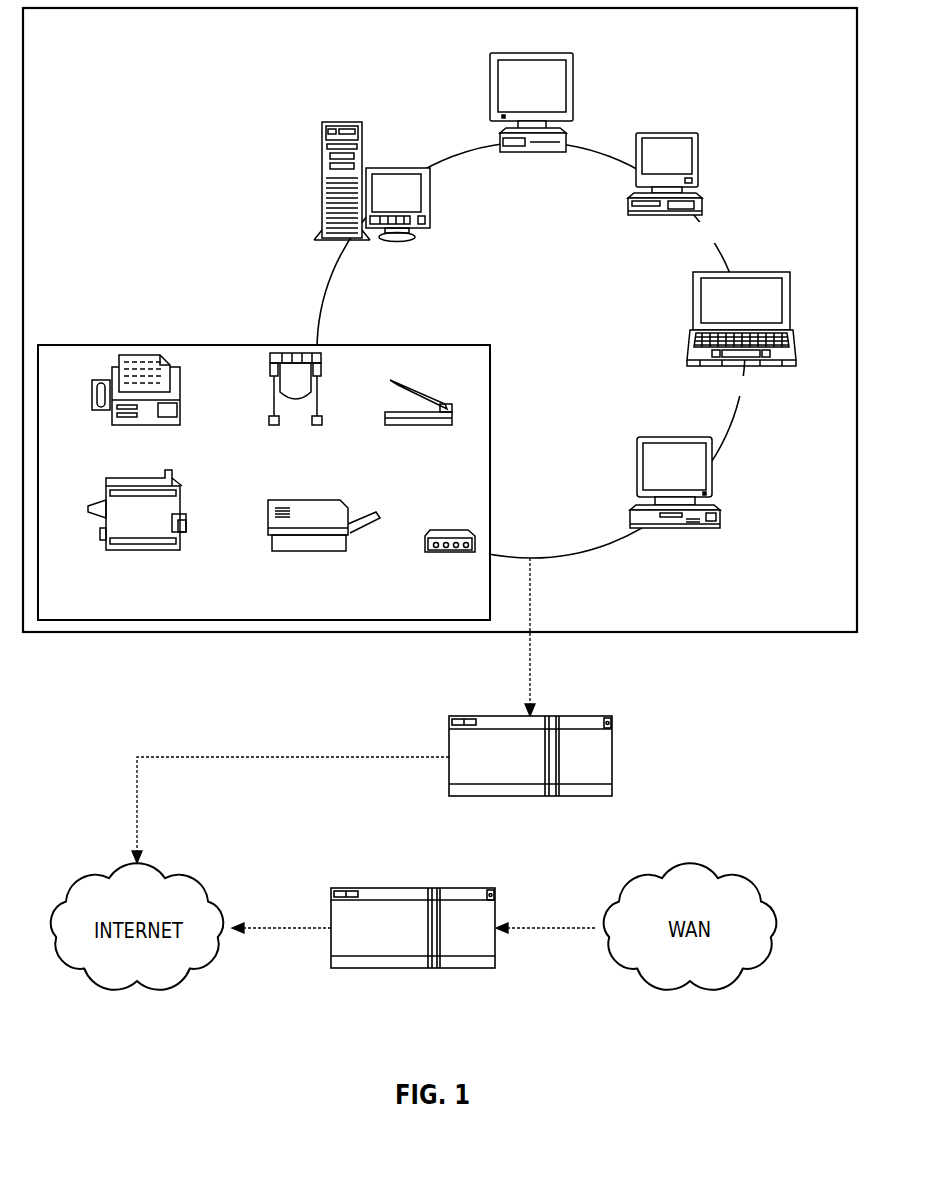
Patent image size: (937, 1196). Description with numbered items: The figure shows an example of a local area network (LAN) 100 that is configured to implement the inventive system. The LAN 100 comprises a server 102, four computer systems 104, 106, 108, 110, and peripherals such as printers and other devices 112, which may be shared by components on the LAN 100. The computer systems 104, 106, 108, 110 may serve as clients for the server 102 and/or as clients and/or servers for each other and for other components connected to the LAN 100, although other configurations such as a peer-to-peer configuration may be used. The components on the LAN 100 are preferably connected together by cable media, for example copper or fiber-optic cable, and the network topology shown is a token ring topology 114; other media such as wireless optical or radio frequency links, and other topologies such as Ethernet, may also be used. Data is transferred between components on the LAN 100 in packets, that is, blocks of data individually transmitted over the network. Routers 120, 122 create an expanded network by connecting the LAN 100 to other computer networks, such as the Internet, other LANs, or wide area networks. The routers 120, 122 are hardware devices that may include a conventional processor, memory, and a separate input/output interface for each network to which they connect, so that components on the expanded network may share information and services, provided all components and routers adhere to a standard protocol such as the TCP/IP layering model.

The local area network (LAN) 100 is at (811, 617).
The server 102 is at (402, 285).
The computer system 104 is at (573, 140).
The computer system 106 is at (705, 205).
The computer system 108 is at (793, 345).
The computer system 110 is at (712, 476).
The peripherals 112 is at (286, 610).
The token ring topology 114 is at (573, 381).
The router 120 is at (582, 797).
The router 122 is at (457, 968).